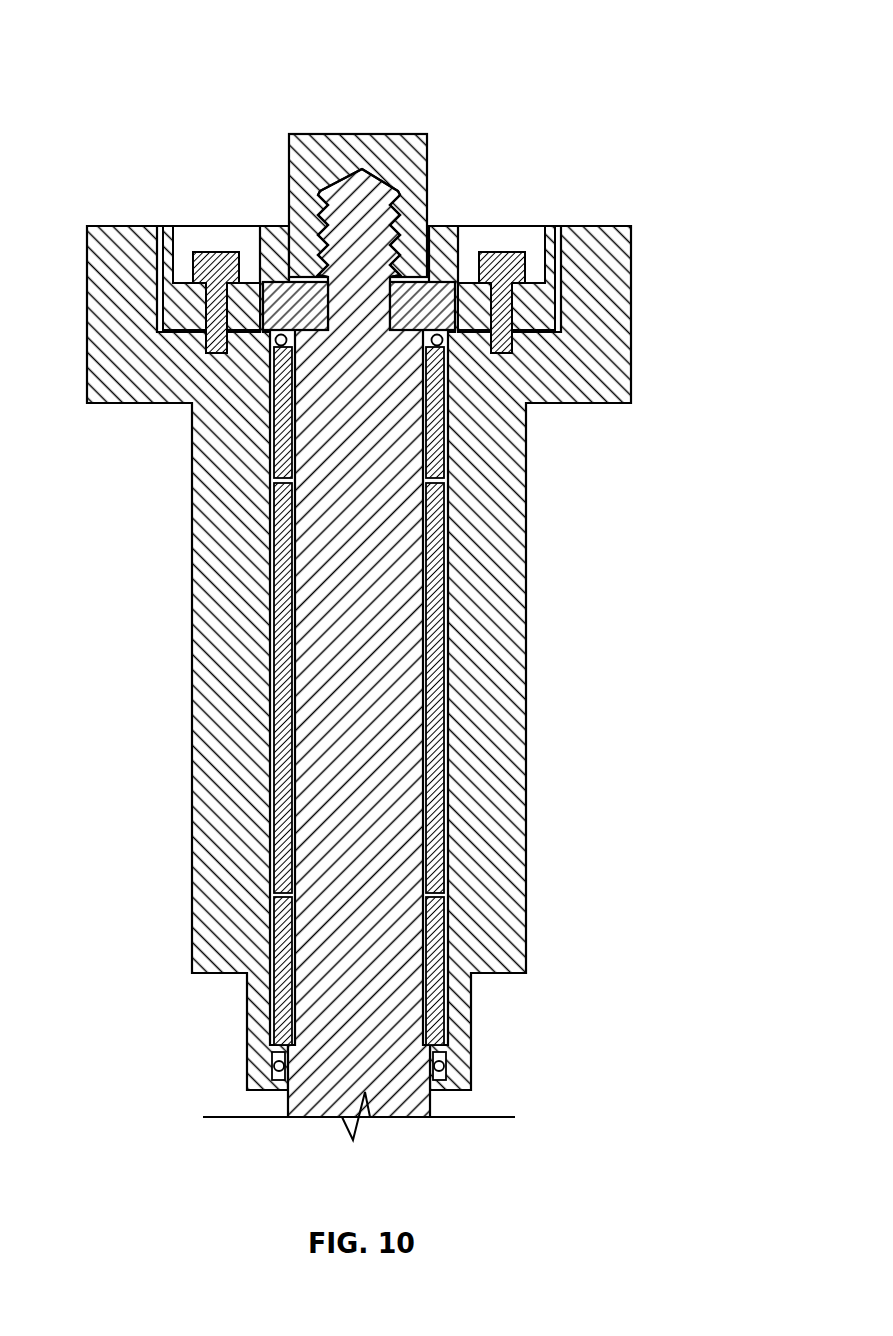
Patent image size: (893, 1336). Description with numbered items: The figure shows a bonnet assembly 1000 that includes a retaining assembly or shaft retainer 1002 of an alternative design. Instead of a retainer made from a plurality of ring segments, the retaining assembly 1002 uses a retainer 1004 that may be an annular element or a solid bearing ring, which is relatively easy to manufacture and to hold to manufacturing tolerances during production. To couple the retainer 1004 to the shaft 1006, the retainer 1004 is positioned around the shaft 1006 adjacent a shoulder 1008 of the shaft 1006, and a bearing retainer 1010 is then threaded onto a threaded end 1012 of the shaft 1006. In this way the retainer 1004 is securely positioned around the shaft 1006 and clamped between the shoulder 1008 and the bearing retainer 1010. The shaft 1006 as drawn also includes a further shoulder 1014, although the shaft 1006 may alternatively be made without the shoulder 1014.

The bonnet assembly 1000 is at (392, 570).
The retaining assembly 1002 is at (447, 198).
The retainer 1004 is at (438, 312).
The shaft 1006 is at (318, 559).
The shoulder 1008 is at (407, 333).
The bearing retainer 1010 is at (350, 133).
The threaded end 1012 is at (314, 214).
The shoulder 1014 is at (275, 1034).